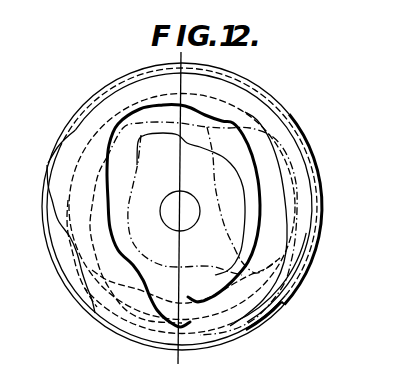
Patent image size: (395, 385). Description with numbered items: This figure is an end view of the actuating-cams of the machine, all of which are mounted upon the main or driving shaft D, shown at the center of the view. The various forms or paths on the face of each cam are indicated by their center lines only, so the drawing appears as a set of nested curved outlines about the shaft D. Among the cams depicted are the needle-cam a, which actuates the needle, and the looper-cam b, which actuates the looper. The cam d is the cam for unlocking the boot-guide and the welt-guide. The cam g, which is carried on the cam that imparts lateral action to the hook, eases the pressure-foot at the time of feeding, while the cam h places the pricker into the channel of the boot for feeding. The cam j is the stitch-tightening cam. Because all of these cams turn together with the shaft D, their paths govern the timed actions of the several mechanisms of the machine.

The needle-cam a is at (261, 218).
The looper-cam b is at (107, 105).
The cam for unlocking the boot-guide and the welt-guide d is at (323, 190).
The cam for easing the pressure-foot g is at (76, 174).
The cam for placing the pricker into the channel of the boot h is at (137, 289).
The stitch-tightening cam j is at (274, 263).
The main or driving shaft D is at (180, 211).